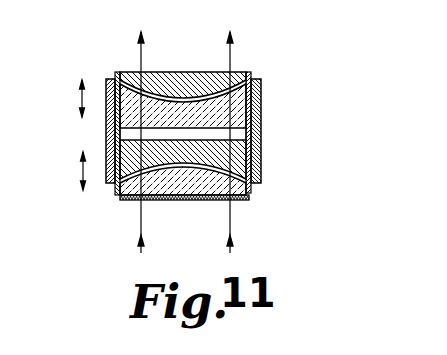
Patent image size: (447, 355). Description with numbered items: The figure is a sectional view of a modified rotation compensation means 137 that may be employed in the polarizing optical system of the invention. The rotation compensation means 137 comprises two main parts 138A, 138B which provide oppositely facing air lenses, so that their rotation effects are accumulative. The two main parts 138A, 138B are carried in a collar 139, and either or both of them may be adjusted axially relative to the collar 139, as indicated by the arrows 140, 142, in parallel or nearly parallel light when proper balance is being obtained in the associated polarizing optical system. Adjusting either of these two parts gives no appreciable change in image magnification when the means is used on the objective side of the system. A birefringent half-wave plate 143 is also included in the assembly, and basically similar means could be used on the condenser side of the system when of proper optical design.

The rotation compensation means 137 is at (188, 142).
The main part 138A is at (112, 197).
The main part 138B is at (127, 72).
The collar 139 is at (261, 90).
The arrow 140 is at (82, 171).
The arrow 142 is at (81, 98).
The birefringent half-wave plate 143 is at (199, 214).